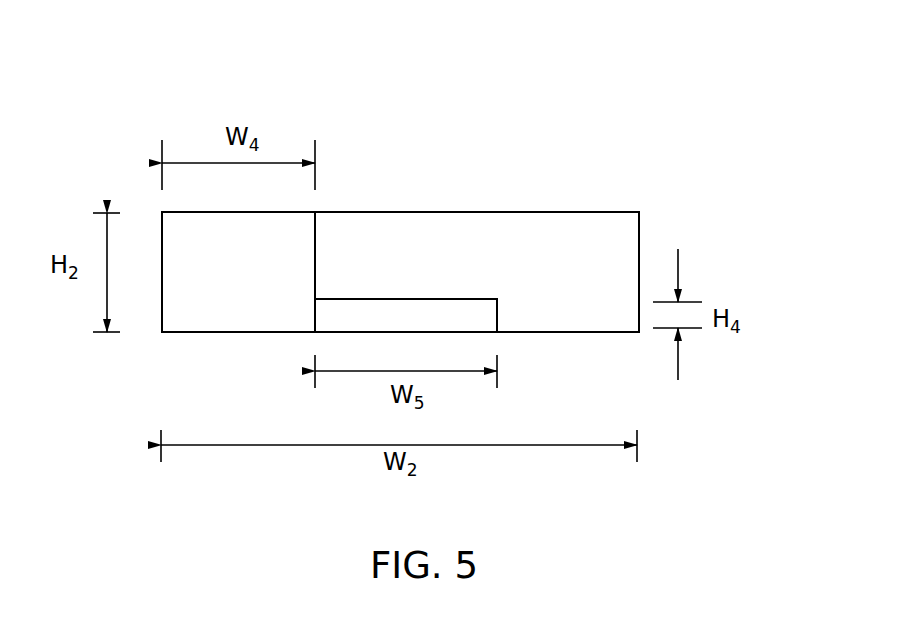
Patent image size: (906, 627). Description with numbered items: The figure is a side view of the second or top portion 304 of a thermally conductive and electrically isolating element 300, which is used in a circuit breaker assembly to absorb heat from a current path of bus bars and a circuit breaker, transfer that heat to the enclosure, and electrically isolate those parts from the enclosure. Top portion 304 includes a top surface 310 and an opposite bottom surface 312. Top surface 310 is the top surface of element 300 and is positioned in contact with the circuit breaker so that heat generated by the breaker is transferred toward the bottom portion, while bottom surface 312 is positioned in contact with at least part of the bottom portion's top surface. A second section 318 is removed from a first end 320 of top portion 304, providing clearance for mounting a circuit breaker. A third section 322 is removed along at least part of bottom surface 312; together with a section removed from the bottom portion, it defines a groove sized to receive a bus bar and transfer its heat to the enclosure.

The thermally conductive and electrically isolating element 300 is at (698, 73).
The top portion 304 is at (678, 197).
The top surface 310 is at (444, 211).
The bottom surface 312 is at (557, 333).
The second section 318 is at (285, 236).
The first end 320 is at (160, 340).
The third section 322 is at (332, 313).